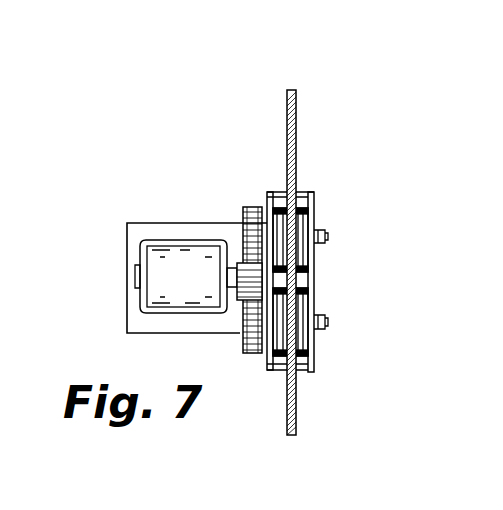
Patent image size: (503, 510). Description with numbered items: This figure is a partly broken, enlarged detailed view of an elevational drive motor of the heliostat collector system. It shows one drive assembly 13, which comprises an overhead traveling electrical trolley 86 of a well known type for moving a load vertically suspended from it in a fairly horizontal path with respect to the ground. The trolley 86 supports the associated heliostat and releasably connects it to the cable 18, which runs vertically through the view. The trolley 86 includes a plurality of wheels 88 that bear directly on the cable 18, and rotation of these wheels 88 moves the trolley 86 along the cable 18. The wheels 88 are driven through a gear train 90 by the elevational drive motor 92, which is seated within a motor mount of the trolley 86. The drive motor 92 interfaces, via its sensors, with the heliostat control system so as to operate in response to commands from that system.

The drive assembly 13 is at (328, 293).
The cable 18 is at (296, 122).
The trolley 86 is at (315, 352).
The wheels 88 is at (303, 224).
The gear train 90 is at (233, 217).
The elevational drive motor 92 is at (199, 293).